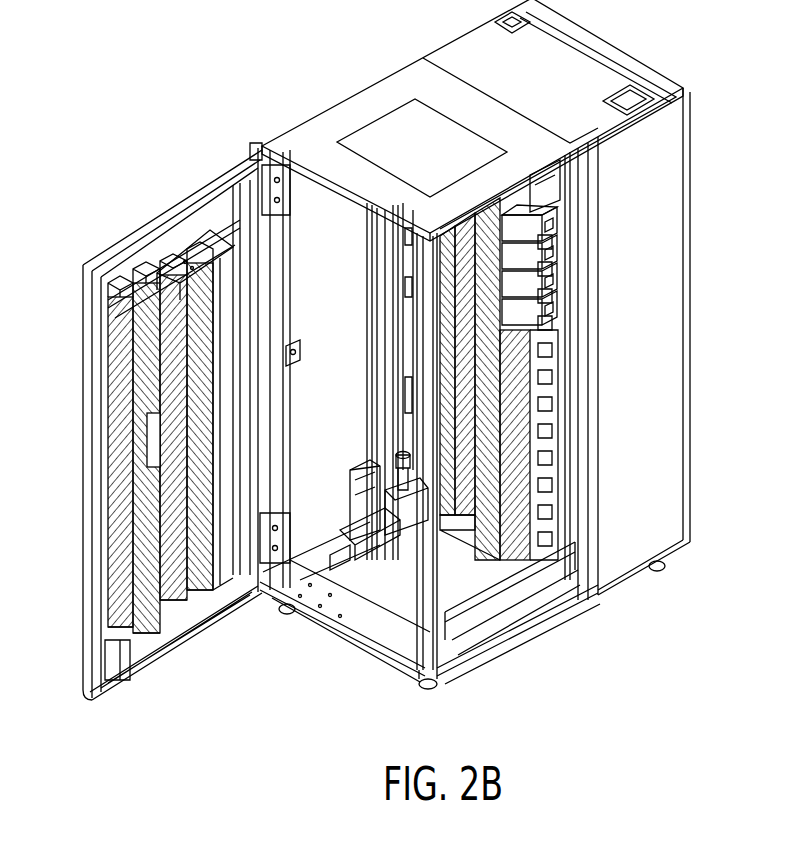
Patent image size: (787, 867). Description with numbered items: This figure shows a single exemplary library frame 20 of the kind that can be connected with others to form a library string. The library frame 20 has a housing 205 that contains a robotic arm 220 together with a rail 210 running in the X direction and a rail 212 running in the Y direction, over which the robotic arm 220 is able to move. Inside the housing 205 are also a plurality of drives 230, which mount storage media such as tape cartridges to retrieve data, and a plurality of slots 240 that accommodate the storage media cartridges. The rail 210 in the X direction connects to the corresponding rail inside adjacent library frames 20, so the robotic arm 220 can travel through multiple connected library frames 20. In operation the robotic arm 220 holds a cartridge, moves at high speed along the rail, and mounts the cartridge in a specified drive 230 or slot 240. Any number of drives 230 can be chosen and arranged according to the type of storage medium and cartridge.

The library frame 20 is at (147, 0).
The housing 205 is at (632, 238).
The rail 210 is at (540, 607).
The rail 212 is at (365, 333).
The robotic arm 220 is at (378, 553).
The drives 230 is at (553, 293).
The slots 240 is at (150, 516).